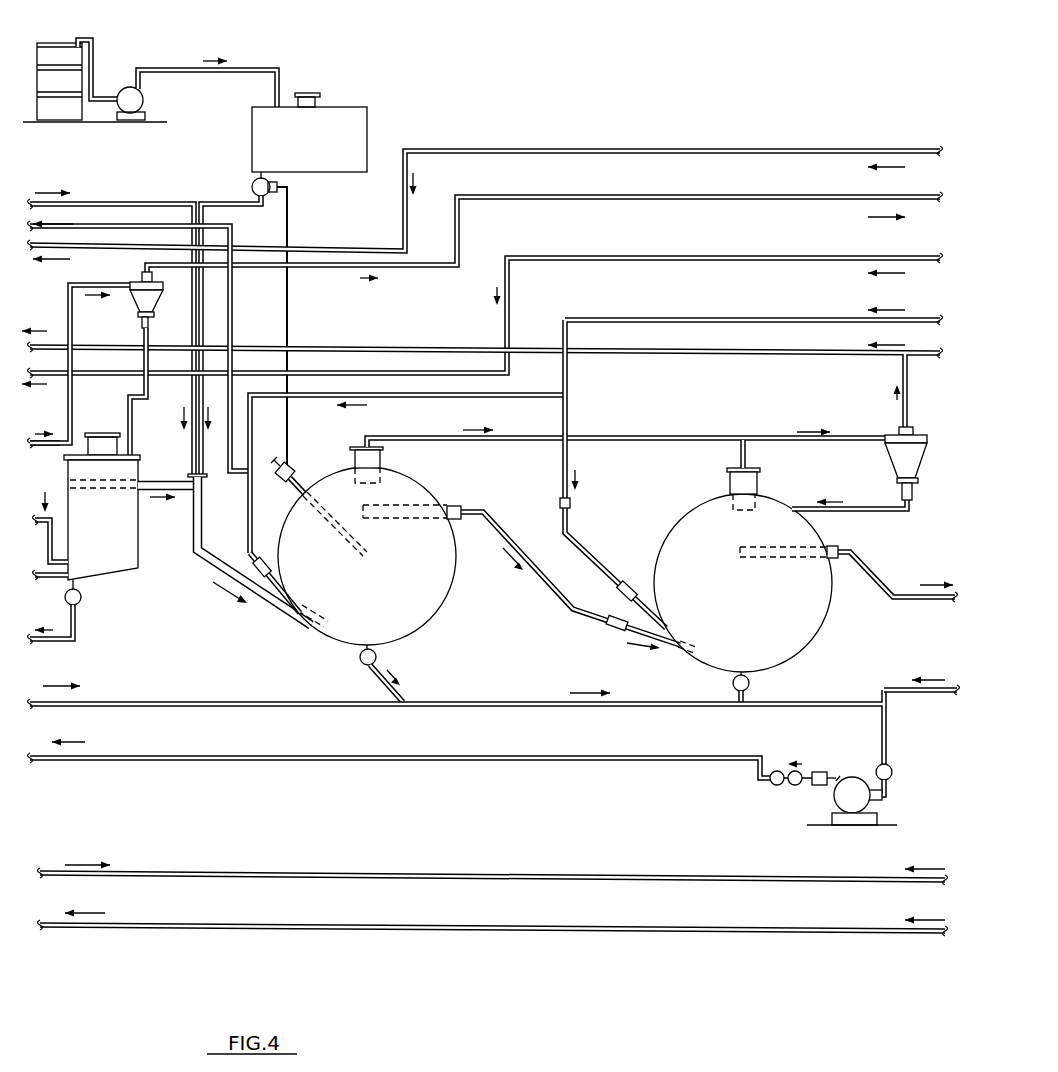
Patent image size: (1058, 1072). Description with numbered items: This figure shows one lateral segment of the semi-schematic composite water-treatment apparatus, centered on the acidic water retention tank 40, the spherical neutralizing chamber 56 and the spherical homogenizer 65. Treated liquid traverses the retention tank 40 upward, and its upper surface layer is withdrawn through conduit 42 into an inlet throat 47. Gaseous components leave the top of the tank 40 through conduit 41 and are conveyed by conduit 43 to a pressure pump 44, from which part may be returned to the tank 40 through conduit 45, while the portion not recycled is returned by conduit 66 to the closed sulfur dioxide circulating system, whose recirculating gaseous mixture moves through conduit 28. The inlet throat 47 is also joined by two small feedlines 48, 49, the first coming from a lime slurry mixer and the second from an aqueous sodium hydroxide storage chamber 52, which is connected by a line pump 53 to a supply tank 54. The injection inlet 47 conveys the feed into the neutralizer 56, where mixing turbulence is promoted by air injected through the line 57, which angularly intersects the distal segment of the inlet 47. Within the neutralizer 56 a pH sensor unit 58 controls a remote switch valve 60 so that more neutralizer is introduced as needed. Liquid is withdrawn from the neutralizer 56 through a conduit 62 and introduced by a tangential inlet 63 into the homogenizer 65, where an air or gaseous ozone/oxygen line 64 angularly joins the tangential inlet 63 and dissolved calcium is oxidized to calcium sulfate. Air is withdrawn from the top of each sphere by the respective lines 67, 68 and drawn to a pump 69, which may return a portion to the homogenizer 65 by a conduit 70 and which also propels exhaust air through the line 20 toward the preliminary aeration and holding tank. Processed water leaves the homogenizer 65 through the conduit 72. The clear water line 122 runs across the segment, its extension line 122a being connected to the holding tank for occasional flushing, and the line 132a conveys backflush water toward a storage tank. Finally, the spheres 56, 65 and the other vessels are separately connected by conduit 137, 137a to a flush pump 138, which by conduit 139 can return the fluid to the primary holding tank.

The supply tank 54 is at (57, 55).
The line pump 53 is at (143, 91).
The aqueous sodium hydroxide storage chamber 52 is at (351, 108).
The remote switch valve 60 is at (252, 186).
The small feedline 48 is at (193, 437).
The small feedline 49 is at (203, 452).
The clear water line 122 is at (596, 149).
The conduit 66 is at (644, 196).
The conduit 28 is at (633, 257).
The line 20 is at (745, 355).
The conduit 43 is at (72, 308).
The conduit 41 is at (78, 442).
The pressure pump 44 is at (150, 294).
The conduit 45 is at (132, 411).
The acidic water retention tank 40 is at (84, 538).
The conduit 42 is at (180, 494).
The inlet throat 47 is at (196, 542).
The air line 57 is at (509, 394).
The pH sensor unit 58 is at (289, 467).
The spherical neutralizing chamber 56 is at (367, 574).
The line 67 is at (423, 441).
The conduit 62 is at (467, 511).
The air or gaseous ozone/oxygen line 64 is at (592, 558).
The tangential inlet 63 is at (623, 628).
The spherical homogenizer 65 is at (743, 586).
The line 68 is at (748, 459).
The conduit 70 is at (878, 505).
The pump 69 is at (917, 455).
The conduit 72 is at (890, 595).
The conduit 137 is at (183, 698).
The conduit 137a is at (933, 697).
The conduit 139 is at (280, 754).
The flush pump 138 is at (840, 792).
The line 122a is at (500, 872).
The line 132a is at (430, 933).